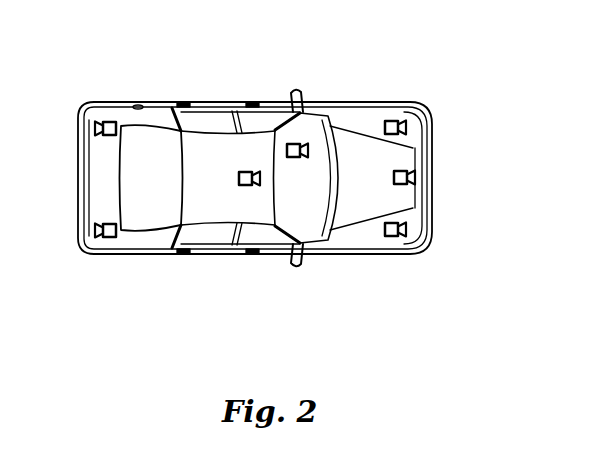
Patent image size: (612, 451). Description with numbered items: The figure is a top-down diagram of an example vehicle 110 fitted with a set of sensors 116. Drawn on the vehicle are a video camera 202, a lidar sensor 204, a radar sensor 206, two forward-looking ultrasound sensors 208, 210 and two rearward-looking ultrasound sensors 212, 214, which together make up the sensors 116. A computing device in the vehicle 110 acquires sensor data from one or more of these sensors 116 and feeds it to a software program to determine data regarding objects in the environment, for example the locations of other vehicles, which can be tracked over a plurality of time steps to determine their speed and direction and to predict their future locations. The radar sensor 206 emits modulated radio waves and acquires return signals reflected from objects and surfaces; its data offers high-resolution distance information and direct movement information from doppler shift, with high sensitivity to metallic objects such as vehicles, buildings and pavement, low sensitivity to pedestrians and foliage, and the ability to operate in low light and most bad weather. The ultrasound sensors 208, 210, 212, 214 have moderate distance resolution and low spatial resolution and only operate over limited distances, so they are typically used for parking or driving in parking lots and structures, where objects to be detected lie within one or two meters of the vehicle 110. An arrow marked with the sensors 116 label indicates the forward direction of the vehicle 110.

The vehicle 110 is at (282, 254).
The sensors 116 is at (462, 177).
The video camera 202 is at (288, 144).
The lidar sensor 204 is at (238, 172).
The radar sensor 206 is at (415, 178).
The forward-looking ultrasound sensor 208 is at (384, 122).
The forward-looking ultrasound sensor 210 is at (384, 232).
The rearward-looking ultrasound sensor 212 is at (106, 121).
The rearward-looking ultrasound sensor 214 is at (108, 238).